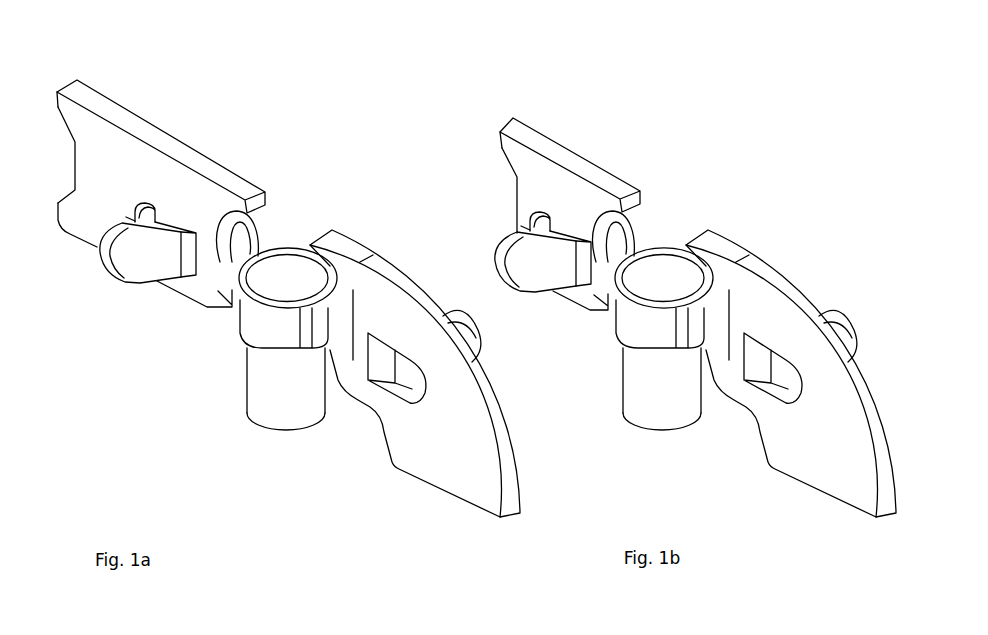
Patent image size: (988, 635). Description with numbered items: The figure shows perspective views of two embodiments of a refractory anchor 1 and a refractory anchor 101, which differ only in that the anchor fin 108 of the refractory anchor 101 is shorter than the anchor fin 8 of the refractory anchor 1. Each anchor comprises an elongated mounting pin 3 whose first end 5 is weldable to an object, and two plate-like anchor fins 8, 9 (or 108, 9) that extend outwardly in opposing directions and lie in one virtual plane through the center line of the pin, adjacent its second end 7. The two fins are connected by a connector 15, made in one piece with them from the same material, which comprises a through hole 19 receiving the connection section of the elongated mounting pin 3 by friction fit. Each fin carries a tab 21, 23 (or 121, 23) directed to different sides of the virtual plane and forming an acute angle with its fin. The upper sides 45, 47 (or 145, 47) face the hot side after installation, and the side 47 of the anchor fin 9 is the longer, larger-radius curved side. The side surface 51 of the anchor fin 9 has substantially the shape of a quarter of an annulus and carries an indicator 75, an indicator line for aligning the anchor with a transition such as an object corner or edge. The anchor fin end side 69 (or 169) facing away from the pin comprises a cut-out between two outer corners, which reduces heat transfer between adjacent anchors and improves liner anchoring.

In FIG. 1A, the refractory anchor 1 is at (207, 109).
In FIG. 1A, the elongated mounting pin 3 is at (278, 392).
In FIG. 1B, the elongated mounting pin 3 is at (650, 388).
In FIG. 1A, the first end 5 is at (290, 429).
In FIG. 1B, the first end 5 is at (660, 432).
In FIG. 1A, the second end 7 is at (285, 280).
In FIG. 1B, the second end 7 is at (663, 268).
In FIG. 1A, the anchor fin 8 is at (87, 221).
In FIG. 1A, the anchor fin 9 is at (479, 499).
In FIG. 1B, the anchor fin 9 is at (845, 495).
In FIG. 1A, the connector 15 is at (250, 325).
In FIG. 1B, the connector 15 is at (658, 328).
In FIG. 1A, the through hole 19 is at (258, 250).
In FIG. 1B, the through hole 19 is at (648, 249).
In FIG. 1A, the tab 21 is at (137, 260).
In FIG. 1A, the tab 23 is at (465, 320).
In FIG. 1B, the tab 23 is at (840, 328).
In FIG. 1A, the upper side 45 is at (110, 106).
In FIG. 1A, the upper side 47 is at (508, 468).
In FIG. 1B, the upper side 47 is at (877, 418).
In FIG. 1A, the side surface 51 is at (387, 403).
In FIG. 1B, the side surface 51 is at (770, 413).
In FIG. 1A, the anchor fin end side 69 is at (73, 170).
In FIG. 1A, the indicator 75 is at (357, 316).
In FIG. 1B, the indicator 75 is at (733, 300).
In FIG. 1B, the refractory anchor 101 is at (621, 128).
In FIG. 1B, the anchor fin 108 is at (533, 181).
In FIG. 1B, the tab 121 is at (528, 273).
In FIG. 1B, the upper side 145 is at (542, 145).
In FIG. 1B, the anchor fin end side 169 is at (515, 205).